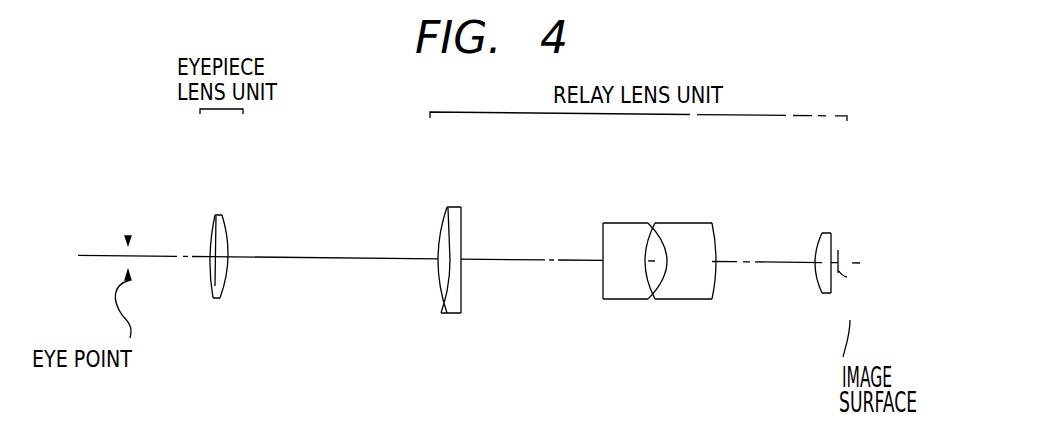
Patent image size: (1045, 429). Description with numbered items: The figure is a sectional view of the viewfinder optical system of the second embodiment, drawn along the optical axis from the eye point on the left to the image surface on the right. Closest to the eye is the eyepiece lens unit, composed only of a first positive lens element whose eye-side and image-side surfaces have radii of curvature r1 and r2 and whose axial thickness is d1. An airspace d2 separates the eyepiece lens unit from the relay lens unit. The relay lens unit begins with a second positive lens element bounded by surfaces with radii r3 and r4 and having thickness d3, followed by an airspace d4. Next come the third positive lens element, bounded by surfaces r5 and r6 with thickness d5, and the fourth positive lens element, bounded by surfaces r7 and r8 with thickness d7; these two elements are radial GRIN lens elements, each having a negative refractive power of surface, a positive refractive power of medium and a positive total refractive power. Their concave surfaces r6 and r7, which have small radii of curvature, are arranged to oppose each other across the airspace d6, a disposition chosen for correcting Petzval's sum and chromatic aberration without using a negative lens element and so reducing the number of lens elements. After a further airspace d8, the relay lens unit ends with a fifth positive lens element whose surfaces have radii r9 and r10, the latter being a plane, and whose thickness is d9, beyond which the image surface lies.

The radius of curvature of the first surface r1 is at (215, 231).
The radius of curvature of the second surface r2 is at (227, 228).
The radius of curvature of the third surface r3 is at (441, 240).
The radius of curvature of the fourth surface r4 is at (462, 227).
The radius of curvature of the fifth surface r5 is at (602, 237).
The radius of curvature of the sixth surface r6 is at (650, 232).
The radius of curvature of the seventh surface r7 is at (660, 237).
The radius of curvature of the eighth surface r8 is at (716, 233).
The radius of curvature of the ninth surface r9 is at (819, 243).
The radius of curvature of the tenth surface r10 is at (834, 237).
The thickness of the first lens element d1 is at (218, 298).
The airspace between the first and second lens elements d2 is at (337, 258).
The thickness of the second lens element d3 is at (446, 296).
The airspace between the second and third lens elements d4 is at (537, 260).
The thickness of the third lens element d5 is at (625, 260).
The airspace between the third and fourth lens elements d6 is at (653, 260).
The thickness of the fourth lens element d7 is at (690, 260).
The airspace between the fourth and fifth lens elements d8 is at (770, 262).
The thickness of the fifth lens element d9 is at (820, 293).